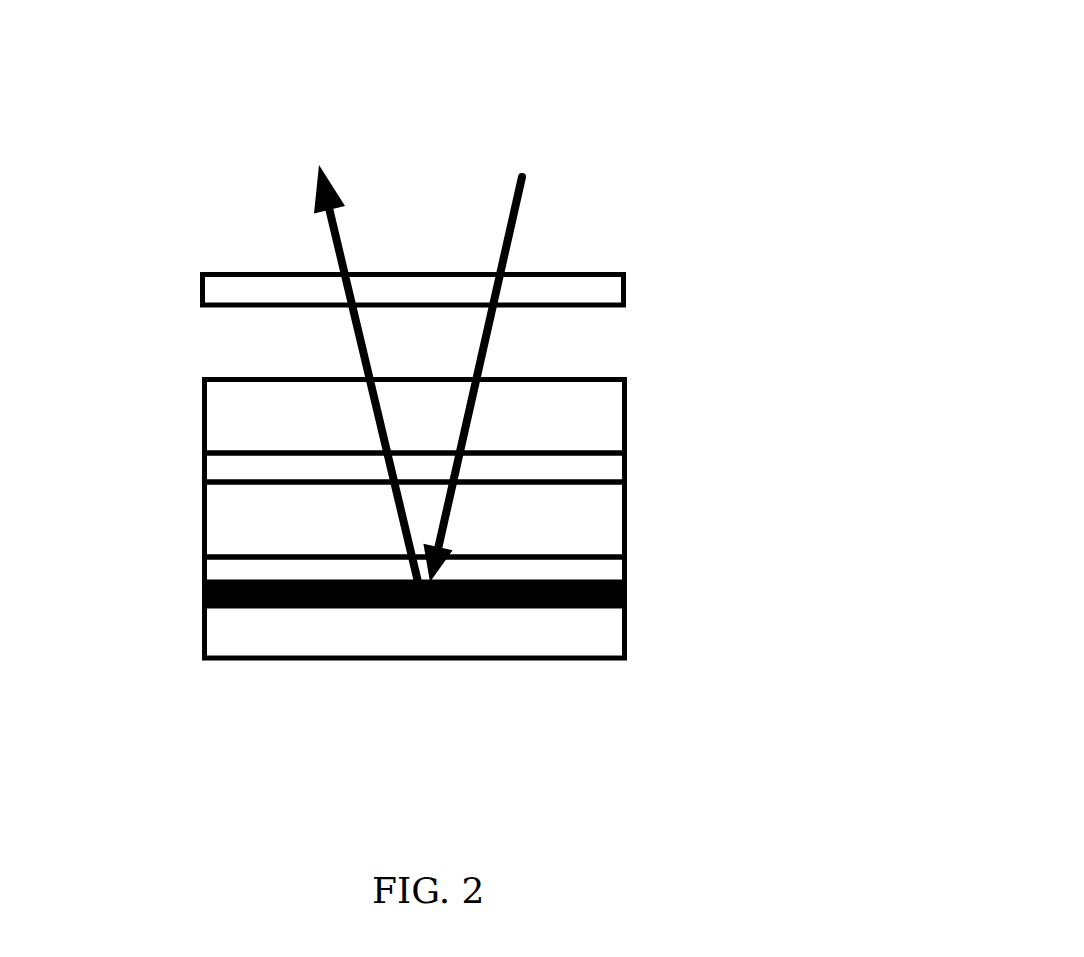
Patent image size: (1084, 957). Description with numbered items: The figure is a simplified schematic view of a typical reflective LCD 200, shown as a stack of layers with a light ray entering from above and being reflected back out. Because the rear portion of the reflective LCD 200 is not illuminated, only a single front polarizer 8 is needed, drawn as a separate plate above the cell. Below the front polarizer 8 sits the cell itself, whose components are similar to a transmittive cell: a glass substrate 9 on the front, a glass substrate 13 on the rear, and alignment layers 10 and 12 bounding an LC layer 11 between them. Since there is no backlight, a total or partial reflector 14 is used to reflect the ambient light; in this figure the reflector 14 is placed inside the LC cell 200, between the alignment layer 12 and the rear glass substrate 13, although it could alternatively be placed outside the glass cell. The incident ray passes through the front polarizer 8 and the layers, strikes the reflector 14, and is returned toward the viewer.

The reflective LCD 200 is at (830, 95).
The front polarizer 8 is at (627, 278).
The glass substrate 9 is at (607, 398).
The alignment layer 10 is at (610, 466).
The LC layer 11 is at (611, 522).
The alignment layer 12 is at (614, 571).
The glass substrate 13 is at (615, 632).
The reflector 14 is at (200, 600).